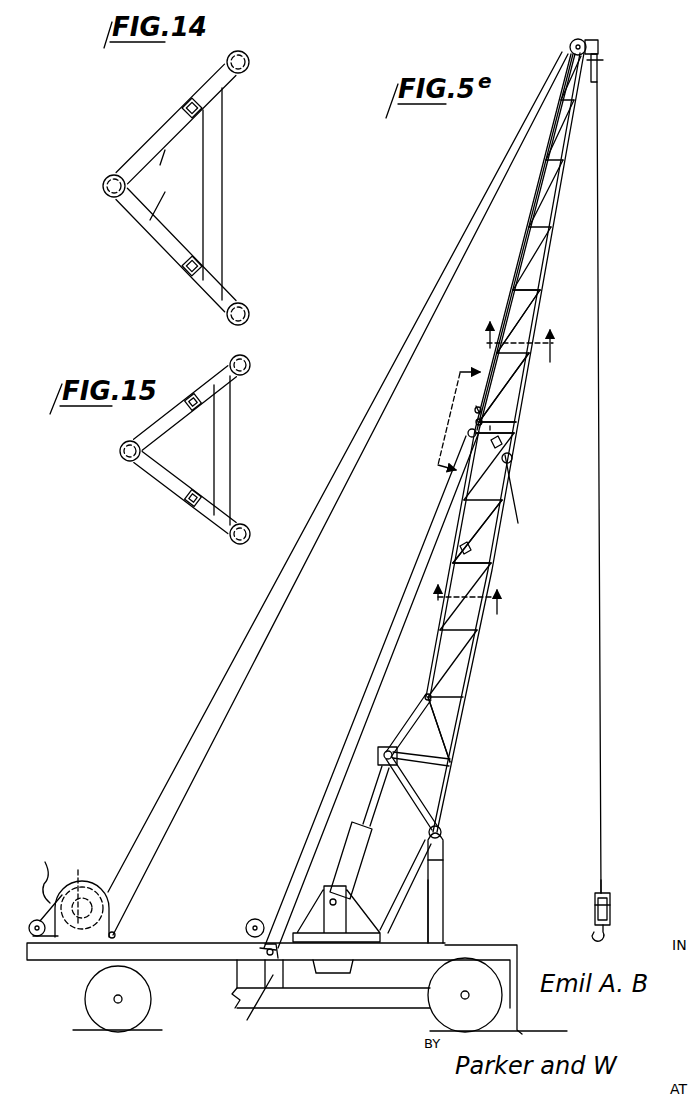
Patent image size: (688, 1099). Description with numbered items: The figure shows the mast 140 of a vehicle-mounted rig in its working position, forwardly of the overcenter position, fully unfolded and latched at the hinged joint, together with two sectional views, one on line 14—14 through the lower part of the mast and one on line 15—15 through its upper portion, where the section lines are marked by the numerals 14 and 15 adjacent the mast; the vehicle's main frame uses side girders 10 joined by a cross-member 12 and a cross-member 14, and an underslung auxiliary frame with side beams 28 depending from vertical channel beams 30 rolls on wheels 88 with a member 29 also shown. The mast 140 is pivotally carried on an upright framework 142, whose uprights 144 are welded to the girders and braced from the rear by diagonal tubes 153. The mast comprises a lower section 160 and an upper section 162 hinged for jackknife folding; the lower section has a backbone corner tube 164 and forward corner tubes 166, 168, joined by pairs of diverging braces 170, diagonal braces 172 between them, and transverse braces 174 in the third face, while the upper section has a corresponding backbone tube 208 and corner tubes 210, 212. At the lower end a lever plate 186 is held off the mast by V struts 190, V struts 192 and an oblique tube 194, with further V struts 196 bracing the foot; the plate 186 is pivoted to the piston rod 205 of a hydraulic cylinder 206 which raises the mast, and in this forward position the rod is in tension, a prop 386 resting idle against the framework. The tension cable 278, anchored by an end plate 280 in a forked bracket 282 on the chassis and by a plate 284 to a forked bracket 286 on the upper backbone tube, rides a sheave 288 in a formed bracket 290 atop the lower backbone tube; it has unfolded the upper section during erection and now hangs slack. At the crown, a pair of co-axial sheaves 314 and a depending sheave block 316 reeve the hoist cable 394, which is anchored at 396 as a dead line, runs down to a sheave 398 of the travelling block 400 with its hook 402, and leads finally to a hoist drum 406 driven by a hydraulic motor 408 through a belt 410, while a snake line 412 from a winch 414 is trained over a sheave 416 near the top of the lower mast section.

In FIG. 5E, the side girders 10 is at (176, 968).
In FIG. 5E, the cross-member 12 is at (450, 425).
In FIG. 5E, the cross-member 14 is at (465, 607).
In FIG. 5E, the section line 15 is at (522, 339).
In FIG. 5E, the side beams 28 is at (368, 998).
In FIG. 5E, the frame beam 29 is at (440, 968).
In FIG. 5E, the vertical channel beams 30 is at (260, 1004).
In FIG. 5E, the wheel 88 is at (98, 982).
In FIG. 5E, the mast 140 is at (528, 433).
In FIG. 5E, the upright framework 142 is at (450, 846).
In FIG. 5E, the uprights 144 is at (440, 898).
In FIG. 5E, the tubes 153 is at (438, 868).
In FIG. 14, the lower section 160 is at (240, 181).
In FIG. 5E, the lower section 160 is at (486, 644).
In FIG. 15, the upper section 162 is at (246, 445).
In FIG. 5E, the upper section 162 is at (510, 260).
In FIG. 14, the corner tube 164 is at (103, 186).
In FIG. 5E, the corner tube 164 is at (442, 512).
In FIG. 14, the corner tube 166 is at (246, 302).
In FIG. 5E, the corner tube 166 is at (478, 548).
In FIG. 14, the corner tube 168 is at (247, 53).
In FIG. 14, the diverging braces 170 is at (167, 185).
In FIG. 5E, the diverging braces 170 is at (500, 498).
In FIG. 14, the diagonal braces 172 is at (208, 86).
In FIG. 5E, the diagonal braces 172 is at (462, 490).
In FIG. 14, the transverse braces 174 is at (215, 136).
In FIG. 5E, the plate 186 is at (390, 746).
In FIG. 5E, the struts 190 is at (422, 800).
In FIG. 5E, the struts 192 is at (430, 758).
In FIG. 5E, the tube 194 is at (418, 712).
In FIG. 5E, the struts 196 is at (442, 722).
In FIG. 5E, the piston rod 205 is at (372, 792).
In FIG. 5E, the hydraulic cylinder 206 is at (340, 832).
In FIG. 15, the backbone tube 208 is at (122, 458).
In FIG. 5E, the backbone tube 208 is at (540, 196).
In FIG. 15, the tube 210 is at (232, 542).
In FIG. 5E, the tube 210 is at (548, 256).
In FIG. 15, the tube 212 is at (249, 360).
In FIG. 5E, the tension cable 278 is at (416, 604).
In FIG. 5E, the end plate 280 is at (272, 925).
In FIG. 5E, the forked bracket 282 is at (262, 960).
In FIG. 5E, the plate 284 is at (474, 411).
In FIG. 5E, the forked bracket 286 is at (476, 406).
In FIG. 5E, the sheave 288 is at (466, 434).
In FIG. 5E, the formed bracket 290 is at (500, 420).
In FIG. 5E, the co-axial sheaves 314 is at (582, 38).
In FIG. 5E, the sheave block 316 is at (600, 78).
In FIG. 5E, the prop 386 is at (408, 848).
In FIG. 5E, the hoist cable 394 is at (287, 593).
In FIG. 5E, the anchor 396 is at (118, 933).
In FIG. 5E, the sheave 398 is at (612, 893).
In FIG. 5E, the travelling block 400 is at (595, 900).
In FIG. 5E, the hook 402 is at (610, 932).
In FIG. 5E, the hoist drum 406 is at (82, 891).
In FIG. 5E, the hydraulic motor 408 is at (33, 920).
In FIG. 5E, the belt 410 is at (34, 875).
In FIG. 5E, the snake line 412 is at (334, 790).
In FIG. 5E, the winch 414 is at (245, 920).
In FIG. 5E, the sheave 416 is at (514, 460).